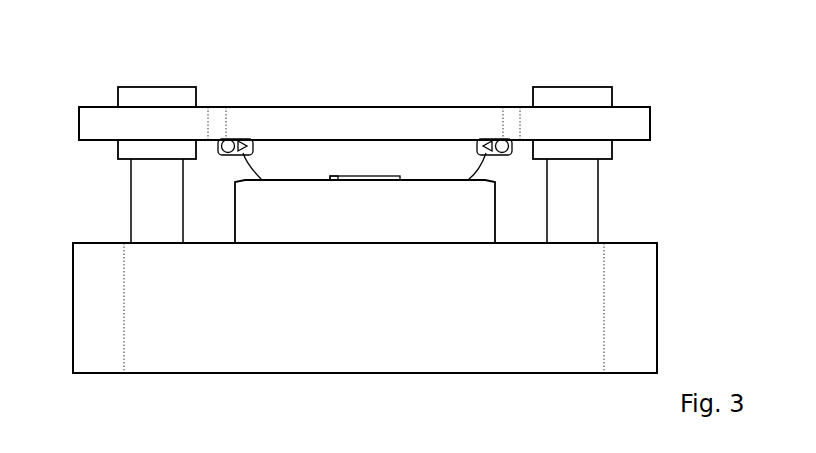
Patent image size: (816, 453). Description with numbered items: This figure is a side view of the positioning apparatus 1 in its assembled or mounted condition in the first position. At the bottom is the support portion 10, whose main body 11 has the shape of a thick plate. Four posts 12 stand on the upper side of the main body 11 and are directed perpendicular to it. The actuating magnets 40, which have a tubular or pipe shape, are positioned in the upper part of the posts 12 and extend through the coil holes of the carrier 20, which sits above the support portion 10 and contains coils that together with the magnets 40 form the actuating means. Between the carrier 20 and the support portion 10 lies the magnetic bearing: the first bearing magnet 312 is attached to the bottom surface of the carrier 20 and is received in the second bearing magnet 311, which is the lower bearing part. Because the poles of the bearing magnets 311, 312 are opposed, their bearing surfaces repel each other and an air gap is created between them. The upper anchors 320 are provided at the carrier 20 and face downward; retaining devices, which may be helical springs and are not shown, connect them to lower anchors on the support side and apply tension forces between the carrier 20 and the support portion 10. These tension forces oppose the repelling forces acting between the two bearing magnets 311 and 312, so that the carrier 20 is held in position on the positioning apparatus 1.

The positioning apparatus 1 is at (685, 94).
The support portion 10 is at (679, 263).
The main body 11 is at (622, 317).
The posts 12 is at (580, 200).
The carrier 20 is at (633, 125).
The actuating magnets 40 is at (560, 93).
The second bearing magnet 311 is at (260, 220).
The first bearing magnet 312 is at (408, 157).
The upper anchors 320 is at (248, 153).